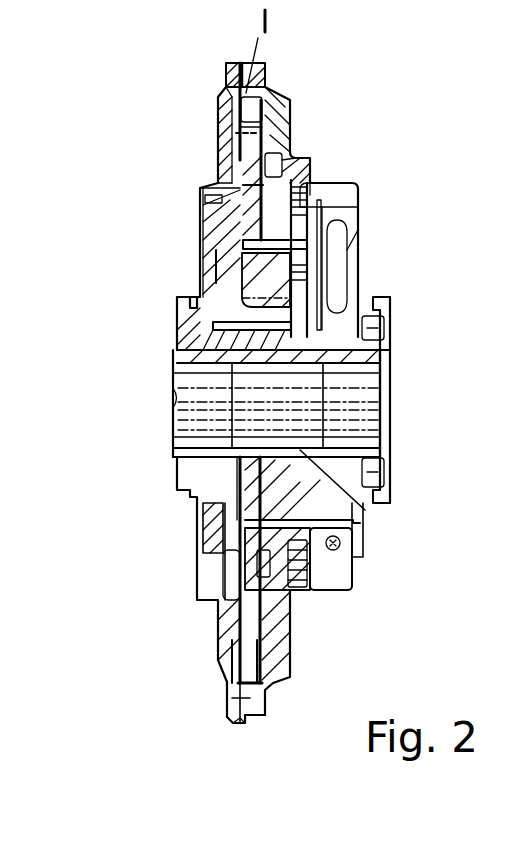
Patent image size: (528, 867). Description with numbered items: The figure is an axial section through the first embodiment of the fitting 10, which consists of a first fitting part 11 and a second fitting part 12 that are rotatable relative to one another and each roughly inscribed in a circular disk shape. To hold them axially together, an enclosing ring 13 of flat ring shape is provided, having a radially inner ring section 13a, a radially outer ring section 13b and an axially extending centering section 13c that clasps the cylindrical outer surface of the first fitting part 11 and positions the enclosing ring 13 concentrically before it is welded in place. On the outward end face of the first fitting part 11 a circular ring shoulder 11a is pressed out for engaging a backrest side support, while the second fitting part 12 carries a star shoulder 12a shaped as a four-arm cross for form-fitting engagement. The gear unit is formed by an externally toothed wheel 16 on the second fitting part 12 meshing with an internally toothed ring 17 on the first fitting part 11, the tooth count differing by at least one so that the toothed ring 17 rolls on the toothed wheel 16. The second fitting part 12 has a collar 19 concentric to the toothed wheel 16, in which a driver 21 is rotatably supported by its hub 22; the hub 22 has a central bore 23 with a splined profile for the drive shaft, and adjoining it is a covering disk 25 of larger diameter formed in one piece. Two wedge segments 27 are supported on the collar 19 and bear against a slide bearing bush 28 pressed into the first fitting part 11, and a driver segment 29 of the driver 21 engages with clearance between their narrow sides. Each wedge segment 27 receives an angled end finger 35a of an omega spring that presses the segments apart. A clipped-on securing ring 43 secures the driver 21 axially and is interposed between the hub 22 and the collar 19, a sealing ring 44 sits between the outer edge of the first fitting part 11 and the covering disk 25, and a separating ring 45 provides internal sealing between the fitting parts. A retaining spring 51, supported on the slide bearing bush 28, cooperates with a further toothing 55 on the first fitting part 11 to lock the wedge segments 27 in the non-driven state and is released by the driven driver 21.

The fitting 10 is at (408, 106).
The first fitting part 11 is at (318, 166).
The ring shoulder 11a is at (306, 605).
The second fitting part 12 is at (224, 162).
The star shoulder 12a is at (208, 590).
The enclosing ring 13 is at (220, 95).
The inner ring section 13a is at (220, 663).
The outer ring section 13b is at (228, 708).
The centering section 13c is at (243, 721).
The externally toothed wheel 16 is at (257, 135).
The internally toothed ring 17 is at (255, 110).
The collar 19 is at (268, 322).
The driver 21 is at (396, 442).
The hub 22 is at (277, 355).
The bore 23 is at (183, 427).
The covering disk 25 is at (358, 250).
The wedge segments 27 is at (265, 287).
The slide bearing bush 28 is at (312, 543).
The driver segment 29 is at (277, 522).
The end finger 35a is at (303, 284).
The securing ring 43 is at (208, 515).
The sealing ring 44 is at (354, 590).
The separating ring 45 is at (222, 211).
The retaining spring 51 is at (322, 212).
The toothing 55 is at (318, 204).